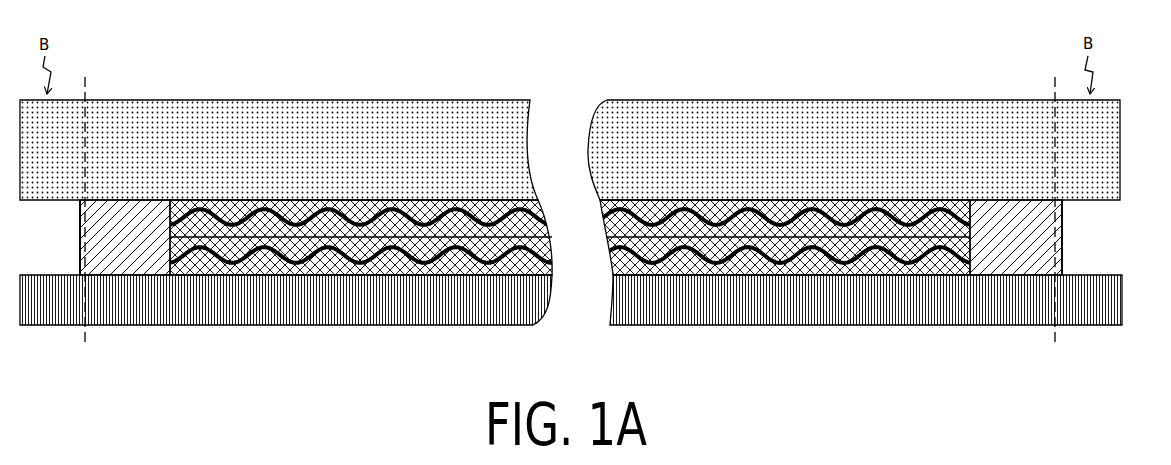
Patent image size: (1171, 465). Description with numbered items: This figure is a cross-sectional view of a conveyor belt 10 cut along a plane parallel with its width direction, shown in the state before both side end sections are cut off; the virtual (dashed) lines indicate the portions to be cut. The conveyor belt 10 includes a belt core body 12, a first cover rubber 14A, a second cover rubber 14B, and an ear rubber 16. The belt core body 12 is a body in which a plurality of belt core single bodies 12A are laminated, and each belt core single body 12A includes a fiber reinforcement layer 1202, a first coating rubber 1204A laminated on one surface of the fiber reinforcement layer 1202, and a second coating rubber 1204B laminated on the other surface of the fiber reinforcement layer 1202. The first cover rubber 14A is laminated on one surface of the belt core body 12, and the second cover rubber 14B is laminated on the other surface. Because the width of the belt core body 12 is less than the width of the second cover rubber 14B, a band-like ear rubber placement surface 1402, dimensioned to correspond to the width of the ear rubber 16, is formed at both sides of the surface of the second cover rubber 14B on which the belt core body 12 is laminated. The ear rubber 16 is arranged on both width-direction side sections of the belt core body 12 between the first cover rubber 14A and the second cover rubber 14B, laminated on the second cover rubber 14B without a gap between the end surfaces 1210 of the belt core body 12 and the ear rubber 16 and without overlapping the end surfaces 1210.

The conveyor belt 10 is at (575, 210).
The belt core body 12 is at (569, 208).
The belt core single body 12A is at (973, 217).
The first cover rubber 14A is at (648, 100).
The second cover rubber 14B is at (682, 326).
The ear rubber 16 is at (80, 262).
The fiber reinforcement layer 1202 is at (876, 237).
The first coating rubber 1204A is at (845, 212).
The second coating rubber 1204B is at (873, 228).
The end surface 1210 is at (605, 216).
The ear rubber placement surface 1402 is at (605, 284).